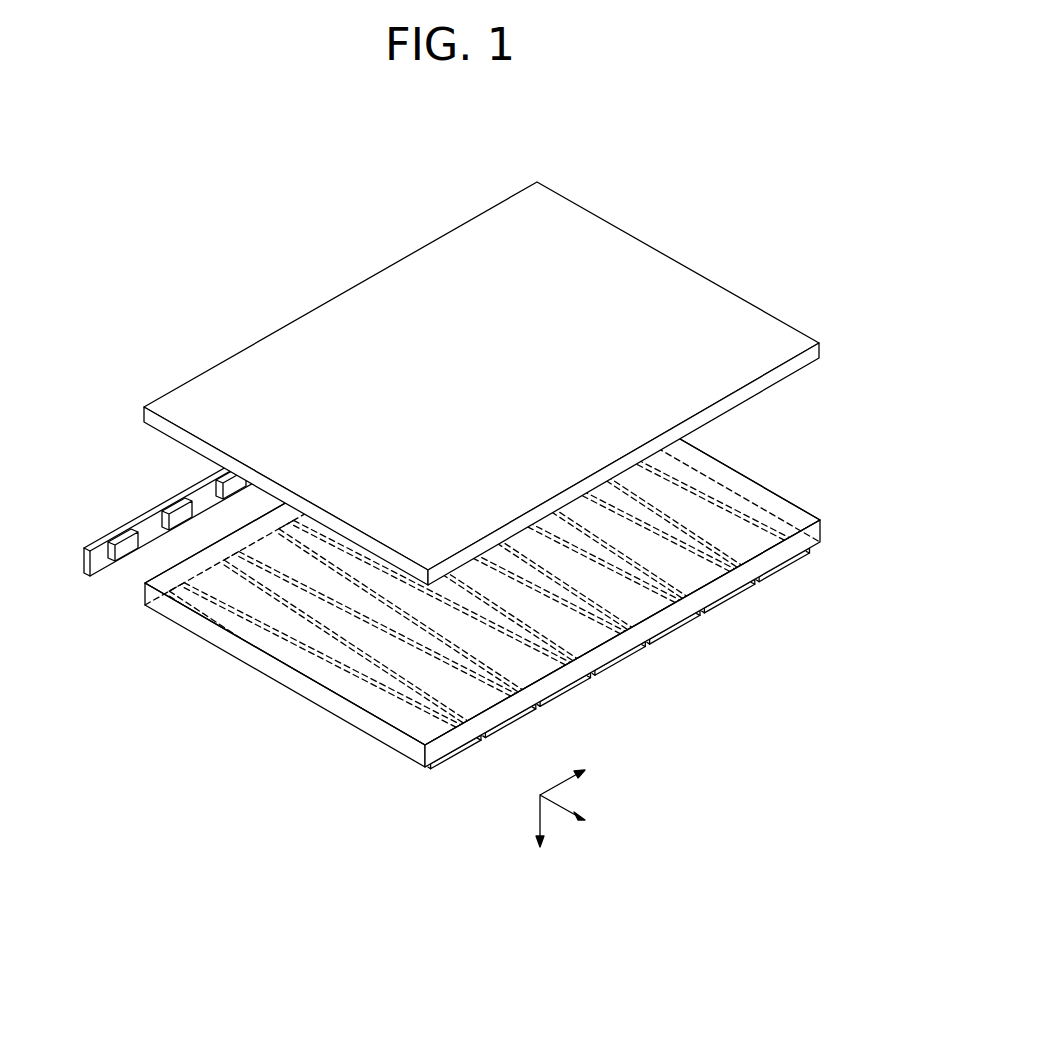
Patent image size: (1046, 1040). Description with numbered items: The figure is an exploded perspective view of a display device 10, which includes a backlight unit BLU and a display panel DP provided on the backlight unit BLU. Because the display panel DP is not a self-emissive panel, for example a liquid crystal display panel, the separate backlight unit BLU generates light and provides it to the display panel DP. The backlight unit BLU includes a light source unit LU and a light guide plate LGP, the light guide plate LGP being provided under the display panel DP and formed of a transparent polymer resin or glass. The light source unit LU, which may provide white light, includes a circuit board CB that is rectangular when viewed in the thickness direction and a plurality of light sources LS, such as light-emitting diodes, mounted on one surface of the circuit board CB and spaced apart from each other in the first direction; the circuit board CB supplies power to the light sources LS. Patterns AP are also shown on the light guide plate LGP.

The display device 10 is at (690, 189).
The display panel DP is at (715, 281).
The backlight unit BLU is at (221, 765).
The light source unit LU is at (130, 650).
The circuit board CB is at (98, 562).
The light source LS is at (122, 556).
The light guide plate LGP is at (190, 622).
The adhesive pattern AP is at (260, 657).